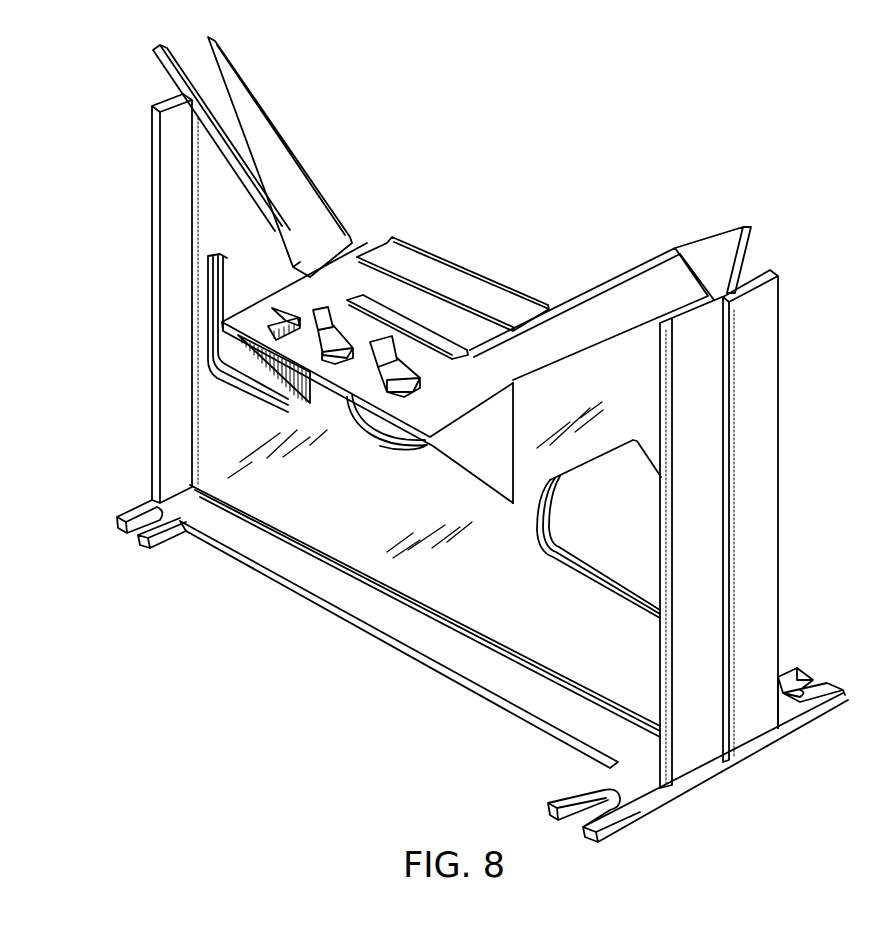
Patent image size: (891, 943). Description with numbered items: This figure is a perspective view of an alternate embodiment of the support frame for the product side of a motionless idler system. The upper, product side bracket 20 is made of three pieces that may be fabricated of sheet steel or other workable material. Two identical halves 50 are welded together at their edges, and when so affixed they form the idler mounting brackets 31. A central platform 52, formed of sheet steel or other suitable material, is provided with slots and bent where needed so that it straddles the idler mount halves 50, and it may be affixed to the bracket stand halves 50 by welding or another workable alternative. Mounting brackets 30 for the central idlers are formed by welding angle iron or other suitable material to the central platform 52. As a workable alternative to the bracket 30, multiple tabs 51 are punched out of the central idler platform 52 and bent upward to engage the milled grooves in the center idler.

The upper, product side bracket 20 is at (393, 525).
The mounting bracket for central idlers 30 is at (425, 263).
The idler mounting bracket 31 is at (660, 252).
The identical half 50 is at (772, 490).
The tab 51 is at (347, 347).
The central platform 52 is at (283, 289).